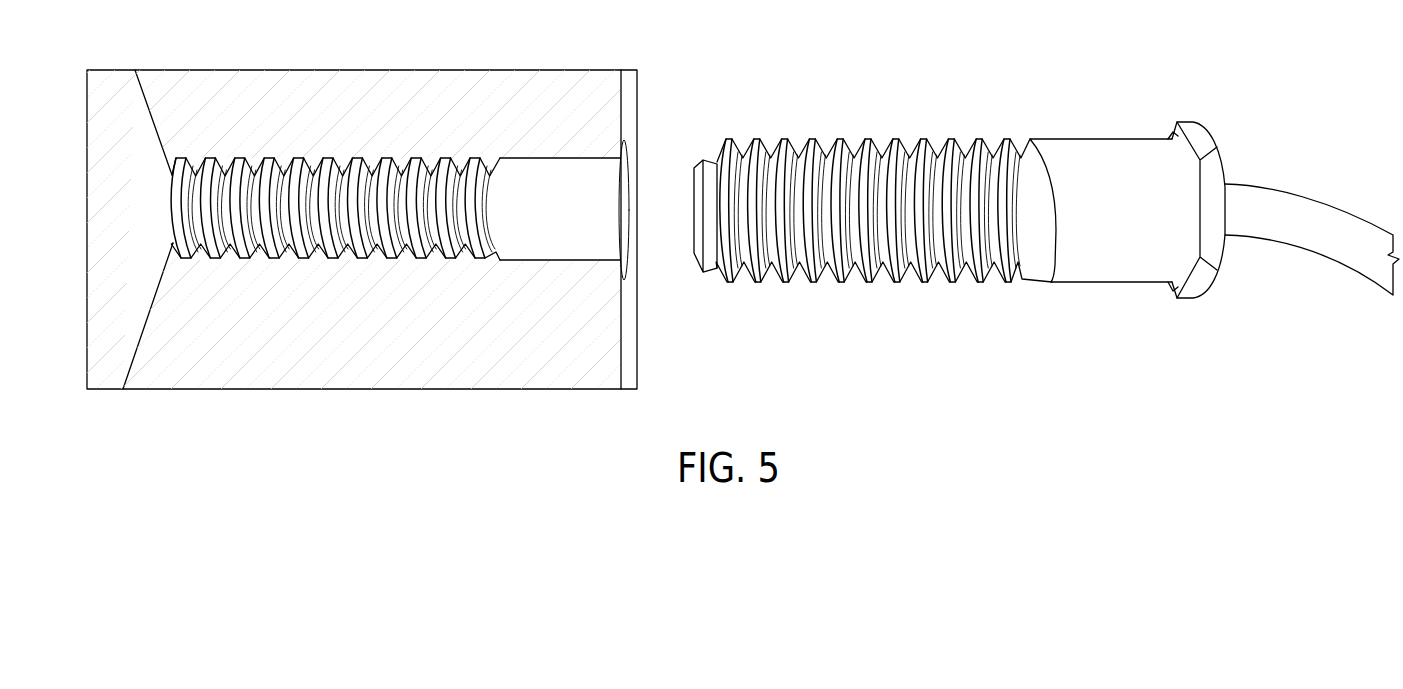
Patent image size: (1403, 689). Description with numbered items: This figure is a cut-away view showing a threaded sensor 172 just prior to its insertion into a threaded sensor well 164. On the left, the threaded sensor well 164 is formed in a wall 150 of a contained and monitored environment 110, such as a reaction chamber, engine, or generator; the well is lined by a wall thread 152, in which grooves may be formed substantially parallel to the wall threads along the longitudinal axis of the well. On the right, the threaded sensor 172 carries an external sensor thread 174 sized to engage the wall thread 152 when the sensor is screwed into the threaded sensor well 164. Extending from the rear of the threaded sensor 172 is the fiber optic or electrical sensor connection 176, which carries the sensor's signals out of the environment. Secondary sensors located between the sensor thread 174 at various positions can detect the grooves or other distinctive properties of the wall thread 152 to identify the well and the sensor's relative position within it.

The contained and monitored environment 110 is at (148, 226).
The wall 150 is at (498, 122).
The wall thread 152 is at (285, 158).
The threaded sensor well 164 is at (345, 142).
The threaded sensor 172 is at (884, 122).
The sensor thread 174 is at (731, 139).
The fiber optic or electrical sensor connection 176 is at (1291, 210).